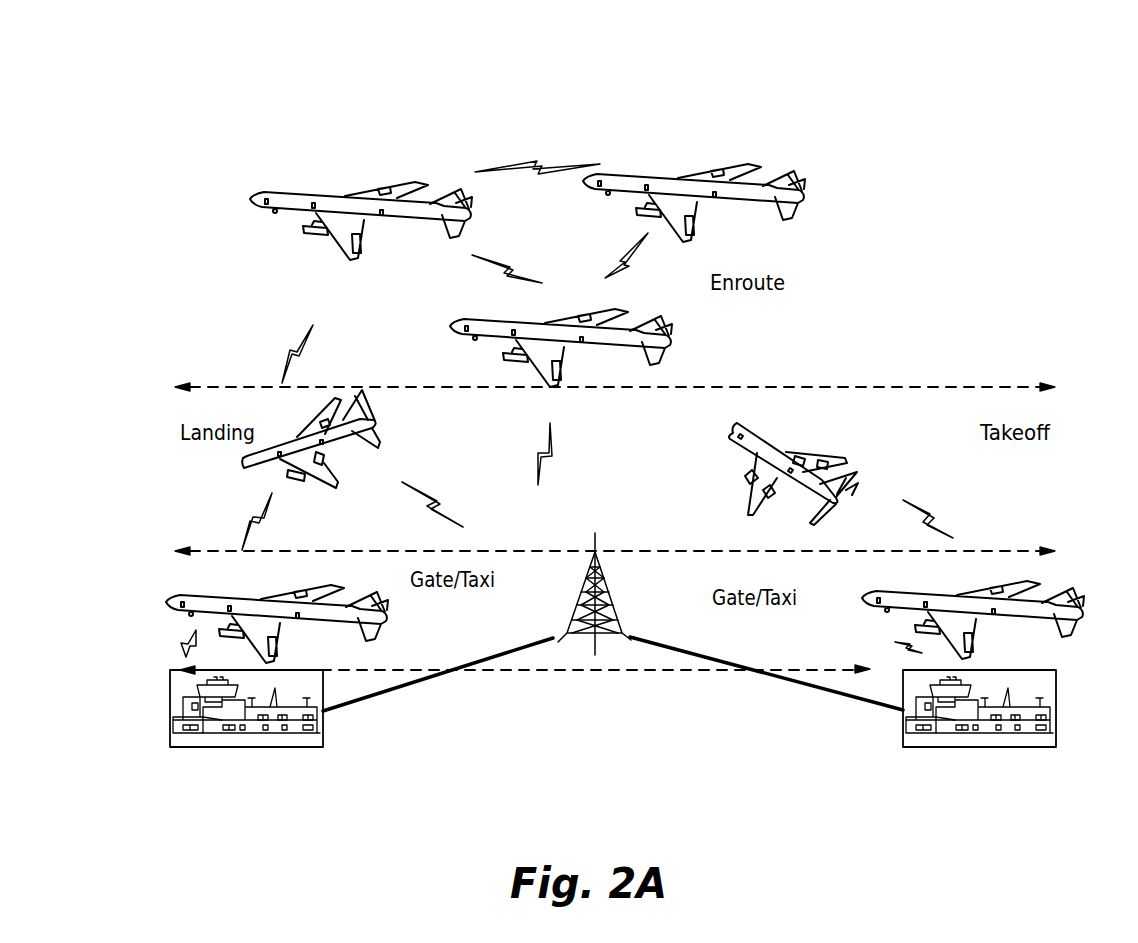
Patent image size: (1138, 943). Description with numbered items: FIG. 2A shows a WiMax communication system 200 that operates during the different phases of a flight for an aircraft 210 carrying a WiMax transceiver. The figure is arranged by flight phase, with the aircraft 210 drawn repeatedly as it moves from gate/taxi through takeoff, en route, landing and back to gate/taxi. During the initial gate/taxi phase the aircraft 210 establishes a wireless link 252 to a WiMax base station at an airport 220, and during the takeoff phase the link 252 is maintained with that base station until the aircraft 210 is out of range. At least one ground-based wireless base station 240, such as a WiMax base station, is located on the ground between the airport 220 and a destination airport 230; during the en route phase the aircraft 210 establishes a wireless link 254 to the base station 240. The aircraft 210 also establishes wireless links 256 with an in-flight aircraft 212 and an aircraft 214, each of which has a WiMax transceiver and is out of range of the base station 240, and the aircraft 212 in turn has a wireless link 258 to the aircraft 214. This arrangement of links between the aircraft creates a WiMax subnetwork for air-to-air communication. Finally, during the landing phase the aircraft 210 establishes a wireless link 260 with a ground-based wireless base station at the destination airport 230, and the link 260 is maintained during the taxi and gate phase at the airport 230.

The WiMax communication system 200 is at (708, 98).
The aircraft 210 is at (655, 359).
The in-flight aircraft 212 is at (798, 183).
The aircraft 214 is at (298, 192).
The airport 220 is at (918, 747).
The destination airport 230 is at (296, 747).
The ground-based wireless base station 240 is at (608, 586).
The wireless link 252 is at (918, 507).
The wireless link 254 is at (552, 437).
The wireless links 256 is at (608, 264).
The wireless link 258 is at (557, 163).
The wireless link 260 is at (263, 513).